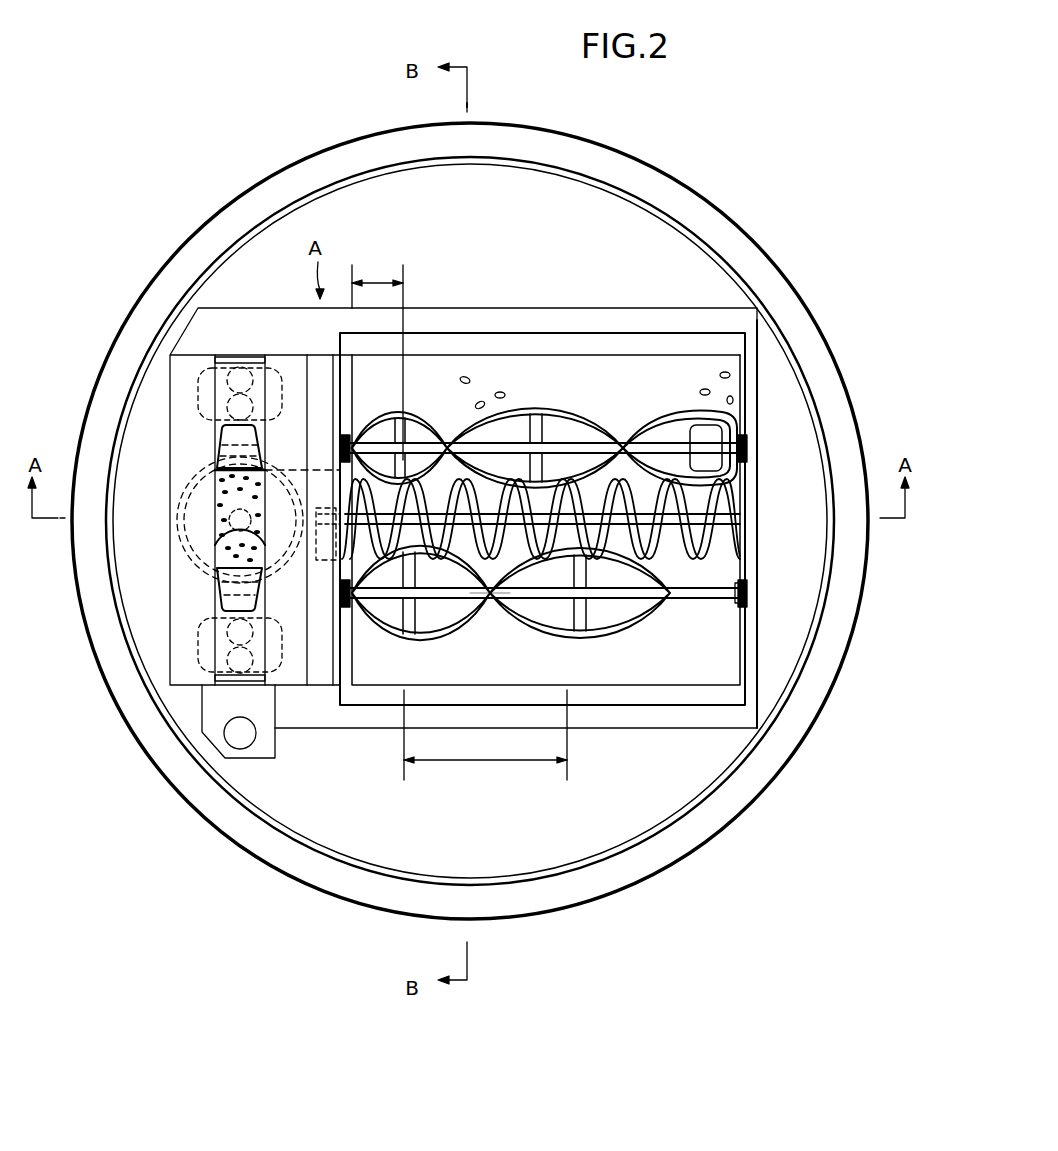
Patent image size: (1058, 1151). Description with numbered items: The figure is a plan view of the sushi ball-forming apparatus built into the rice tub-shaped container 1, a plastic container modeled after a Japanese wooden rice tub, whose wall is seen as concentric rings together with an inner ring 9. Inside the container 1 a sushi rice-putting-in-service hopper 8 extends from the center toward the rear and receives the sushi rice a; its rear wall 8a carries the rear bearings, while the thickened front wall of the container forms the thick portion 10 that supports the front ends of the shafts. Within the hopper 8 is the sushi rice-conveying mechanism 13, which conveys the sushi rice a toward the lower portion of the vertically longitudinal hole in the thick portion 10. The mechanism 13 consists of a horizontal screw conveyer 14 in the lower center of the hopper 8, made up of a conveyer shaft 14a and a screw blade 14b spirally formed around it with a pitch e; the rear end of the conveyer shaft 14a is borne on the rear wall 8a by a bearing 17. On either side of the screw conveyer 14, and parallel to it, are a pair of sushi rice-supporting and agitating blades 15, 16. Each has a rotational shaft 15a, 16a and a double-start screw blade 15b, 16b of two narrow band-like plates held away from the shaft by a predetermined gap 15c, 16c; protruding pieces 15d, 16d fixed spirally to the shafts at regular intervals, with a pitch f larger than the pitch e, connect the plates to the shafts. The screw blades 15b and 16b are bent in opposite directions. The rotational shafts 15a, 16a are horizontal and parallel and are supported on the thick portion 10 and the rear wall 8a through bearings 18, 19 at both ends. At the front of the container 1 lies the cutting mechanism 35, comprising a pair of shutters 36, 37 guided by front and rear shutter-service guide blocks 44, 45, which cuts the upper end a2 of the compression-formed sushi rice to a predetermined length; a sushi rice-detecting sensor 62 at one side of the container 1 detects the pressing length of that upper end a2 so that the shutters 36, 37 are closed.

The rice tub-shaped container 1 is at (619, 151).
The inner cylinder 9 is at (525, 185).
The sushi rice-putting-in-service hopper 8 is at (652, 373).
The rear wall 8a is at (756, 472).
The sushi rice a is at (718, 370).
The thick portion 10 is at (315, 373).
The sushi rice-conveying mechanism 13 is at (487, 410).
The horizontal screw conveyer 14 is at (577, 585).
The conveyer shaft 14a is at (495, 600).
The screw blade 14b is at (742, 566).
The sushi rice-supporting and agitating blade 15 is at (516, 612).
The rotational shaft 15a is at (437, 632).
The double-start screw blade 15b is at (668, 616).
The predetermined gap 15c is at (615, 622).
The protruding pieces 15d is at (380, 633).
The sushi rice-supporting and agitating blade 16 is at (544, 384).
The rotational shaft 16a is at (440, 420).
The double-start screw blade 16b is at (652, 415).
The predetermined gap 16c is at (528, 435).
The protruding pieces 16d is at (690, 430).
The bearing 17 is at (740, 521).
The bearings 18 is at (340, 596).
The bearings 19 is at (340, 450).
The cutting mechanism 35 is at (222, 545).
The shutter 36 is at (218, 606).
The shutter 37 is at (225, 425).
The shutter-service guide block 44 is at (218, 462).
The shutter-service guide block 45 is at (293, 672).
The sushi rice-detecting sensor 62 is at (240, 740).
The upper end of the compression-formed sushi rice a2 is at (215, 500).
The pitch of the screw blade e is at (377, 359).
The pitch of the protruding pieces f is at (485, 738).